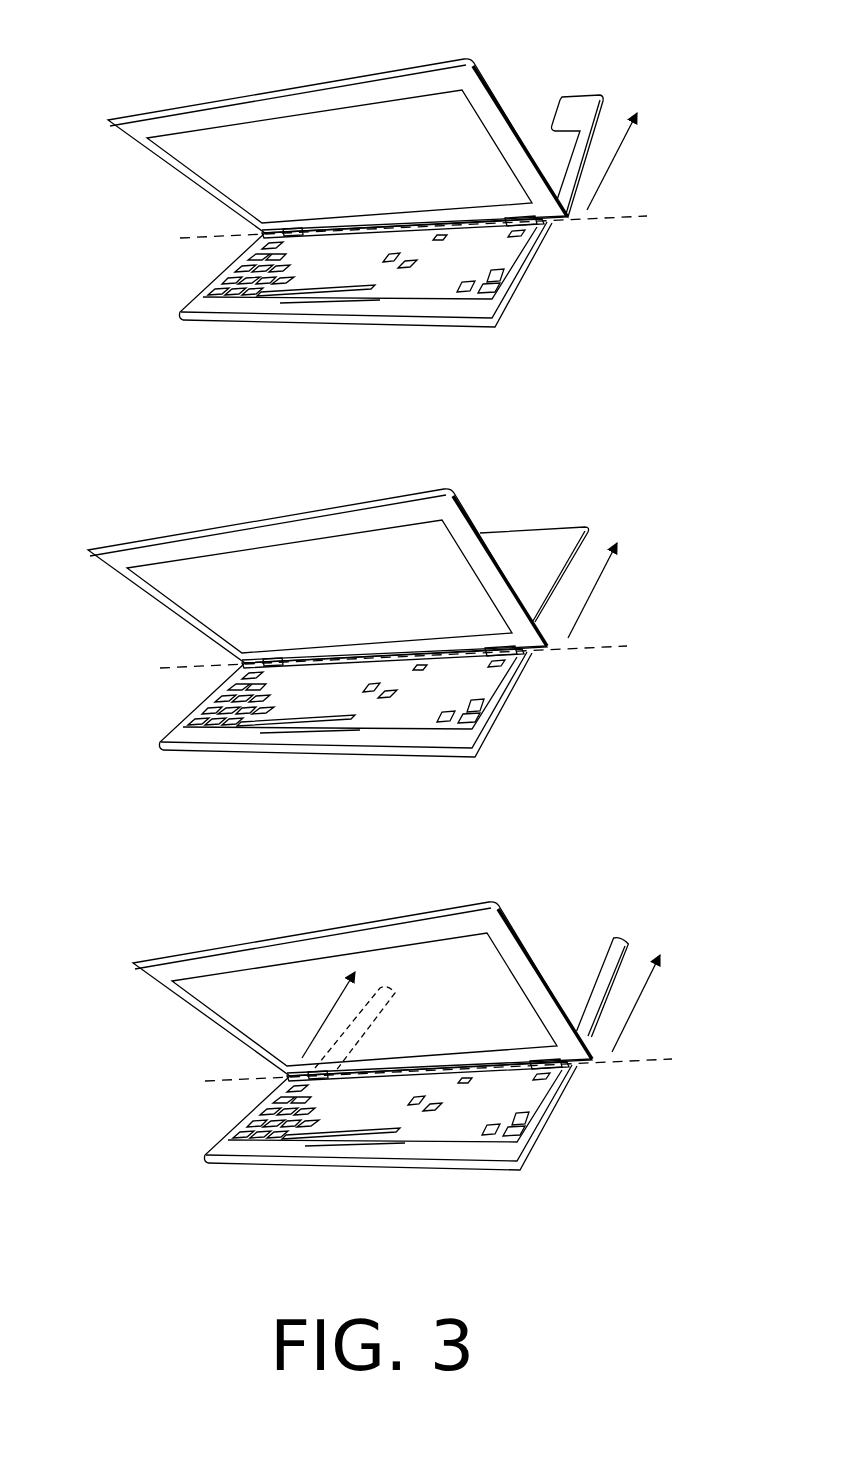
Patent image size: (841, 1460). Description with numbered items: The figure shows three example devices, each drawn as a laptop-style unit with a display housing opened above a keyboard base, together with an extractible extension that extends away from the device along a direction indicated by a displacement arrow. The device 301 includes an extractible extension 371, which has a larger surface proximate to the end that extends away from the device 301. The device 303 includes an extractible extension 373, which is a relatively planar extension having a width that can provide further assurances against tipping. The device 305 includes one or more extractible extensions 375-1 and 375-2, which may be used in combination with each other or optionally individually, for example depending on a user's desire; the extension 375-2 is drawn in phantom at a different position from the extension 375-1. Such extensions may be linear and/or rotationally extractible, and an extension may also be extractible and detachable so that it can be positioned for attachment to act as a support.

The device 301 is at (158, 50).
The extractible extension 371 is at (589, 70).
The device 303 is at (138, 480).
The extractible extension 373 is at (559, 518).
The device 305 is at (155, 916).
The extractible extension 375-1 is at (625, 908).
The extractible extension 375-2 is at (375, 908).